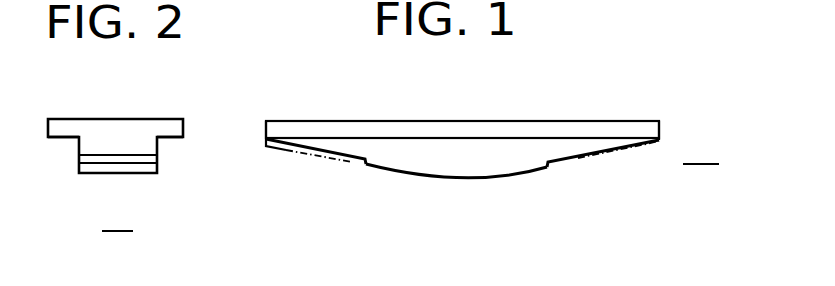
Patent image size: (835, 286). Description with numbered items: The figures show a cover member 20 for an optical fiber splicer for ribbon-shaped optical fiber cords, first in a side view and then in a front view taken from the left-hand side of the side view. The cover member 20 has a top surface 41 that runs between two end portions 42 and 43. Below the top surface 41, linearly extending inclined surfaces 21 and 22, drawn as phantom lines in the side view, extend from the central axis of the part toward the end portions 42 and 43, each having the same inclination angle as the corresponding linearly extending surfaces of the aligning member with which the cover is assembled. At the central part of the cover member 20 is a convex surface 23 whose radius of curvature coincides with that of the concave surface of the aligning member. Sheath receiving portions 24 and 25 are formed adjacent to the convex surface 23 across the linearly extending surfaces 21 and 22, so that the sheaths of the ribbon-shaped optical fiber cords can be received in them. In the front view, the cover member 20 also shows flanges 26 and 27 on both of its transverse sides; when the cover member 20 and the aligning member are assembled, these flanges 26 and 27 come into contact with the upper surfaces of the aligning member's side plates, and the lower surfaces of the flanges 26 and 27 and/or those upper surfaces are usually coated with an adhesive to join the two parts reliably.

In FIG. 2, the cover member 20 is at (115, 176).
In FIG. 1, the cover member 20 is at (477, 152).
In FIG. 1, the linearly extending inclined surface 21 is at (327, 162).
In FIG. 1, the linearly extending inclined surface 22 is at (590, 163).
In FIG. 1, the convex surface 23 is at (458, 178).
In FIG. 1, the sheath receiving portion 24 is at (307, 157).
In FIG. 1, the sheath receiving portion 25 is at (640, 151).
In FIG. 2, the flange 26 is at (57, 139).
In FIG. 2, the flange 27 is at (171, 139).
In FIG. 1, the flange 27 is at (562, 141).
In FIG. 1, the top surface 41 is at (362, 121).
In FIG. 1, the end portion 42 is at (266, 138).
In FIG. 1, the end portion 43 is at (659, 134).